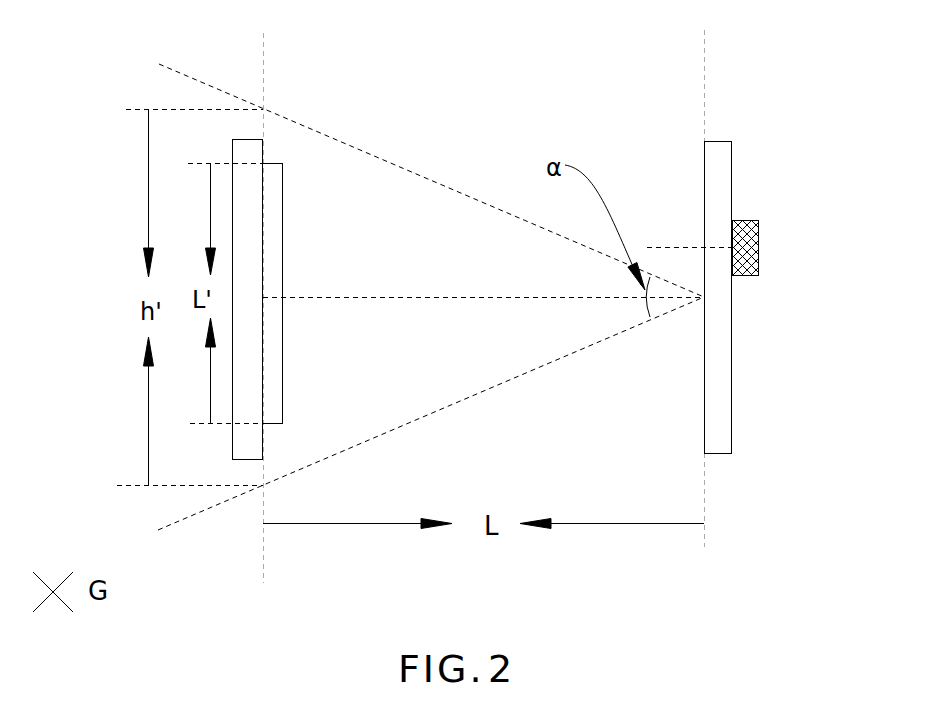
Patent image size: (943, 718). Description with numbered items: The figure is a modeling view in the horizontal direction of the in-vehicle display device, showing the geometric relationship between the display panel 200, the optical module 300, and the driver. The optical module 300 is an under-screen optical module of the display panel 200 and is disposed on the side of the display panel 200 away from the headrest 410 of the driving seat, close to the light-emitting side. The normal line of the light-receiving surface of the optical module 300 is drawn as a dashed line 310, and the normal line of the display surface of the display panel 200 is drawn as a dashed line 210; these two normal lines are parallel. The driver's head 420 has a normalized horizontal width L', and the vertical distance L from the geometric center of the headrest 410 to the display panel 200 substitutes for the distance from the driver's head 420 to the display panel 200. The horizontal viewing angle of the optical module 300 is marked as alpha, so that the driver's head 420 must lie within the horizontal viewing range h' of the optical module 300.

The headrest 410 is at (247, 138).
The driver's head 420 is at (270, 163).
The dashed line 210 is at (415, 297).
The dashed line 310 is at (680, 247).
The optical module 300 is at (760, 247).
The display panel 200 is at (731, 417).